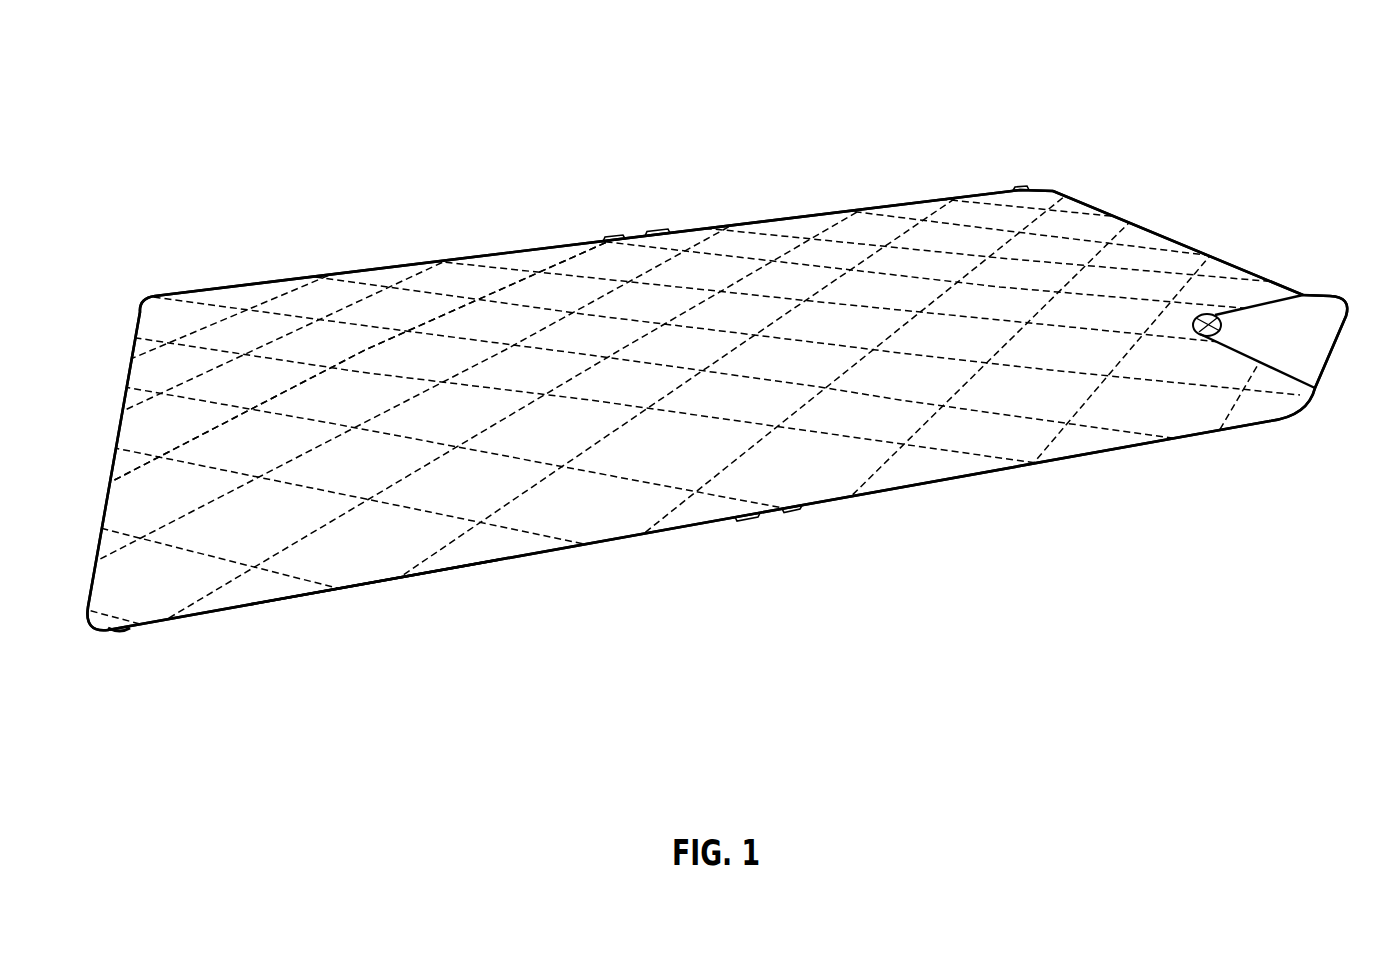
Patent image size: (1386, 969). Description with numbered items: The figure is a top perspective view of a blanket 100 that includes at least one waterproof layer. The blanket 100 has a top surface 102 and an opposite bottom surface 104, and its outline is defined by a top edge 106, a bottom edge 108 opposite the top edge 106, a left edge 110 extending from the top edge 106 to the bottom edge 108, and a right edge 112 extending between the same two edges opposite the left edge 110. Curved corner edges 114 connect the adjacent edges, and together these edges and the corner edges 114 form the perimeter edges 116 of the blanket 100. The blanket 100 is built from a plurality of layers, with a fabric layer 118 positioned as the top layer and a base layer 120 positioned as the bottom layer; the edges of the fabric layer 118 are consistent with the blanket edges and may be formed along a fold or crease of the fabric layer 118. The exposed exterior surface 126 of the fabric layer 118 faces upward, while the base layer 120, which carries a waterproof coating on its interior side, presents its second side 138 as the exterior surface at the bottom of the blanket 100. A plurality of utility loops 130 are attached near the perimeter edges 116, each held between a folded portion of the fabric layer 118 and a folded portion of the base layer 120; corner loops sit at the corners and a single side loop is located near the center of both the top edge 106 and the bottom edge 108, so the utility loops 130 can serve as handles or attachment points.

The blanket 100 is at (124, 67).
The top surface 102 is at (737, 312).
The bottom surface 104 is at (1320, 327).
The top edge 106 is at (462, 260).
The bottom edge 108 is at (553, 548).
The left edge 110 is at (137, 357).
The right edge 112 is at (1143, 223).
The corner edges 114 is at (95, 625).
The perimeter edges 116 is at (372, 585).
The fabric layer 118 is at (418, 313).
The base layer 120 is at (1290, 330).
The exterior surface 126 is at (1007, 273).
The utility loops 130 is at (1207, 317).
The second side 138 is at (1320, 307).